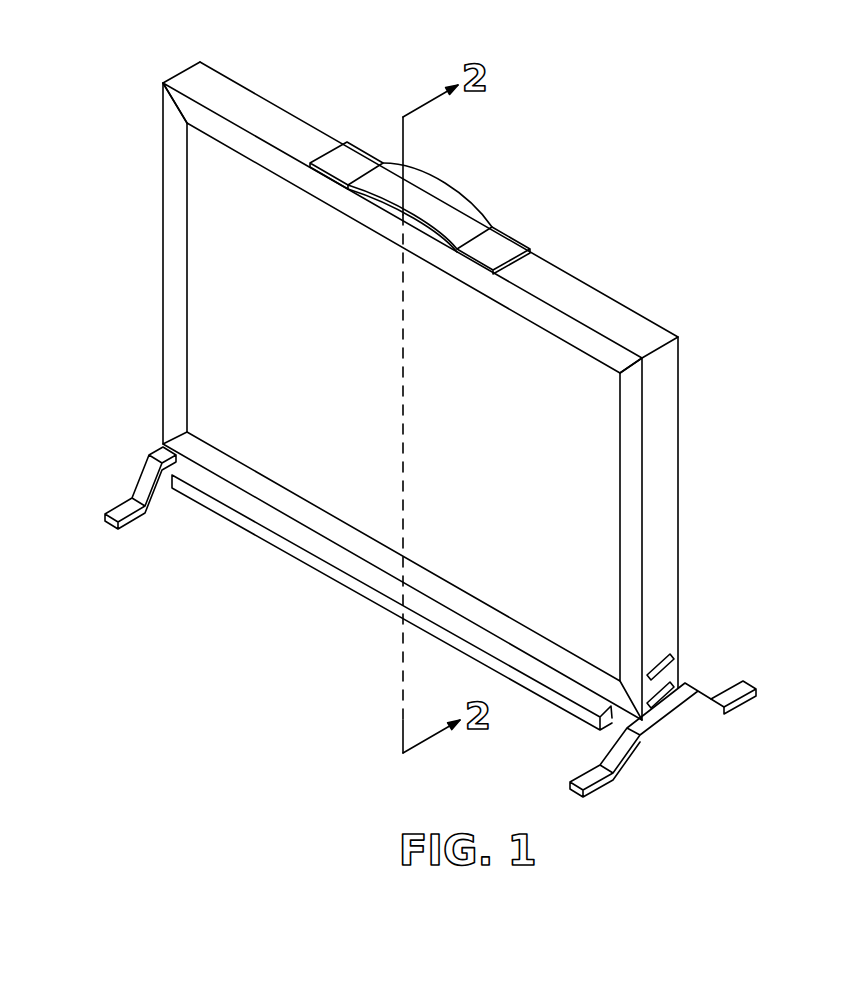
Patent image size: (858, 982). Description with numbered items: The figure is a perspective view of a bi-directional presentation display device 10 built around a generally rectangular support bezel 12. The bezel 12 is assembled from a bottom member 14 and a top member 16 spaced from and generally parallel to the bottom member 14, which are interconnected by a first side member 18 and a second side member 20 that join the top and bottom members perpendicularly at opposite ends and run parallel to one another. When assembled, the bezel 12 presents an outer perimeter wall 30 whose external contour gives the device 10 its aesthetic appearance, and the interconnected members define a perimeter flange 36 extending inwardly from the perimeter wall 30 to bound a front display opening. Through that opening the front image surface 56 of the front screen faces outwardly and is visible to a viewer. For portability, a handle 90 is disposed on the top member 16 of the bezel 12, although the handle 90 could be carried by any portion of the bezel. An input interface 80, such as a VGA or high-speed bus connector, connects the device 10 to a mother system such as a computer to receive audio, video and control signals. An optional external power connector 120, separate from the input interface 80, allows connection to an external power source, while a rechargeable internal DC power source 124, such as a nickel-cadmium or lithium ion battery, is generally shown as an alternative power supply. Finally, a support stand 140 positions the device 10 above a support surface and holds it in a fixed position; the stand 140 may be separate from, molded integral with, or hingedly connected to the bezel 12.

The bi-directional presentation display device 10 is at (448, 419).
The support bezel 12 is at (414, 386).
The bottom member 14 is at (275, 497).
The top member 16 is at (218, 128).
The first side member 18 is at (162, 188).
The second side member 20 is at (663, 458).
The outer perimeter wall 30 is at (543, 277).
The perimeter flange 36 is at (277, 162).
The front image surface 56 is at (412, 415).
The input interface 80 is at (711, 714).
The handle 90 is at (462, 192).
The external power connector 120 is at (672, 655).
The rechargeable internal DC power source 124 is at (372, 576).
The support stand 140 is at (747, 682).